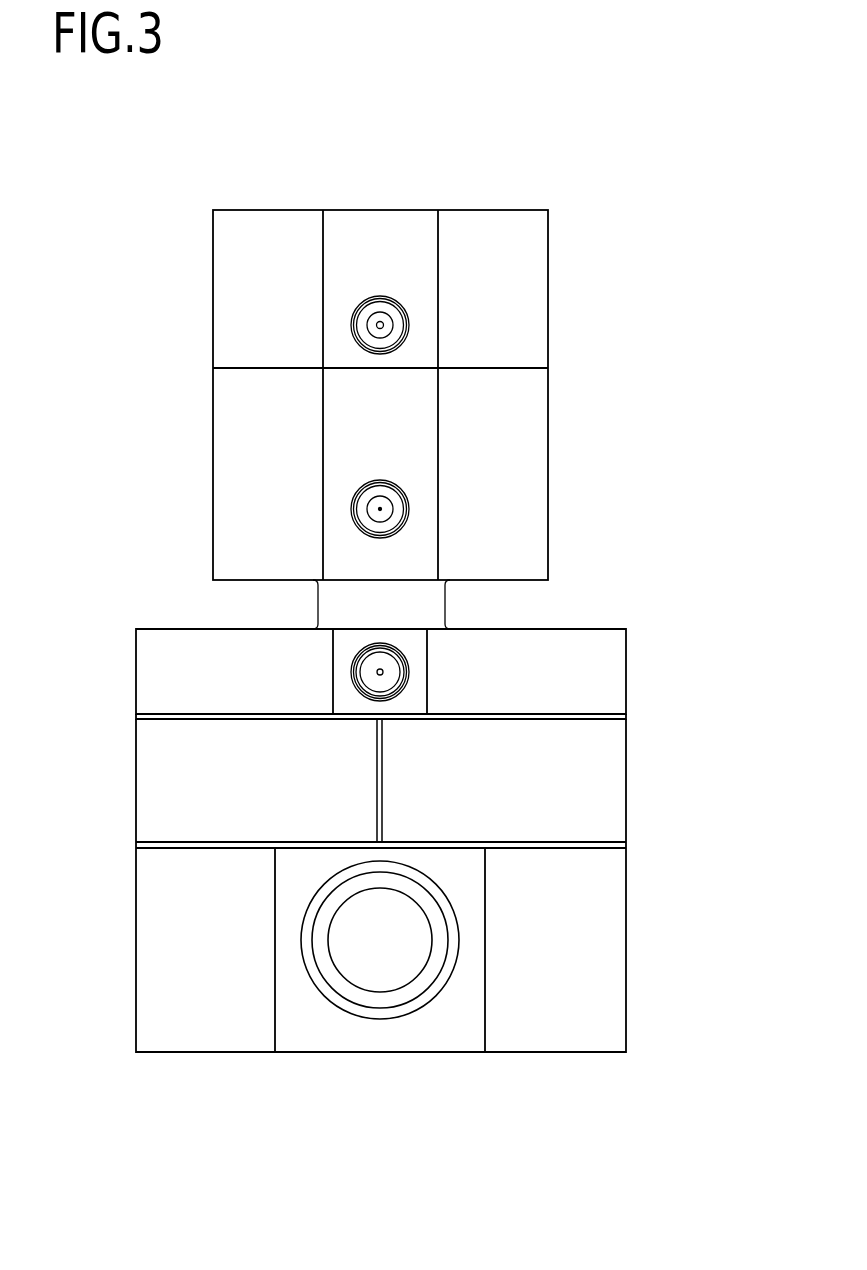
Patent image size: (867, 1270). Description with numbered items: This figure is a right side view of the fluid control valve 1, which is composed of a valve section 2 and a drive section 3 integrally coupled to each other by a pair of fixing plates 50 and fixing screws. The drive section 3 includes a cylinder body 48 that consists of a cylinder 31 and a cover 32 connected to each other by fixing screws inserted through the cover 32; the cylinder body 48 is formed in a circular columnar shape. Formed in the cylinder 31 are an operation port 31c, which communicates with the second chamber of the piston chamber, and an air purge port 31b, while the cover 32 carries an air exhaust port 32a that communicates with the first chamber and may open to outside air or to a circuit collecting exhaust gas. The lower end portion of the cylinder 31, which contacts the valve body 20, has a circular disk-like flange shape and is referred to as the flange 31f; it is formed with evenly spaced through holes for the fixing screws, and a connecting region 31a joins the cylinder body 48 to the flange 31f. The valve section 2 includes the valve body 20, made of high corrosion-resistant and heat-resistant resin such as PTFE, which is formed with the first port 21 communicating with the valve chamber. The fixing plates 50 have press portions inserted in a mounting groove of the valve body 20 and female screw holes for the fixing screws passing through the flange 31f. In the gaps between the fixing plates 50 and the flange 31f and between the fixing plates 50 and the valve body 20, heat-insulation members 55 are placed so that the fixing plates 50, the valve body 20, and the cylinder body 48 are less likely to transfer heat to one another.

The fluid control valve 1 is at (621, 168).
The valve section 2 is at (715, 718).
The drive section 3 is at (714, 722).
The valve body 20 is at (315, 1037).
The first port 21 is at (387, 968).
The cylinder 31 is at (236, 433).
The connecting portion 31a is at (318, 605).
The air purge port 31b is at (368, 668).
The operation port 31c is at (386, 509).
The flange 31f is at (145, 697).
The cover 32 is at (236, 285).
The air exhaust port 32a is at (384, 322).
The cylinder body 48 is at (550, 419).
The fixing plate 50 is at (144, 797).
The heat-insulation member 55 is at (146, 716).